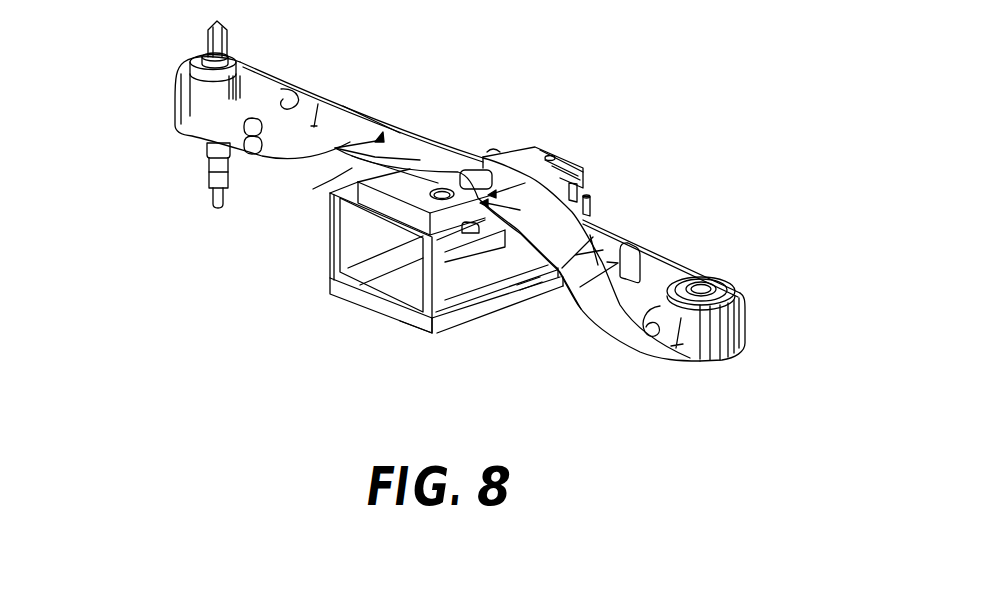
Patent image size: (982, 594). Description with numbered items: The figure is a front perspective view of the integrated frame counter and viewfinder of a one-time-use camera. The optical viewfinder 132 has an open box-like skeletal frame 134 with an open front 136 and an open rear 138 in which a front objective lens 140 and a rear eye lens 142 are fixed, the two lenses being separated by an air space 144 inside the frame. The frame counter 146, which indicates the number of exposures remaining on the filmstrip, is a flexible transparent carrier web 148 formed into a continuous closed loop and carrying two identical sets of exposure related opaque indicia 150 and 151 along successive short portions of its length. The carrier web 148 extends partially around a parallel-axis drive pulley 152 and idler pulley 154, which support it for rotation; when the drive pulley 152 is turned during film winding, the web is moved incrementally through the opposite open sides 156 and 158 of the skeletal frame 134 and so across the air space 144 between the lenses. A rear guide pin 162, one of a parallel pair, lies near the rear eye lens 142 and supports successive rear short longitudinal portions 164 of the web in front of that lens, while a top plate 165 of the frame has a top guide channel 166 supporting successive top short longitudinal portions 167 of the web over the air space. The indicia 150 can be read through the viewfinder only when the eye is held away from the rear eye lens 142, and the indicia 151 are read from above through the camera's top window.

The optical viewfinder 132 is at (467, 253).
The skeletal frame 134 is at (449, 335).
The open front 136 is at (340, 296).
The open rear 138 is at (588, 187).
The front objective lens 140 is at (400, 268).
The rear eye lens 142 is at (592, 203).
The air space 144 is at (500, 262).
The frame counter 146 is at (241, 50).
The carrier web 148 is at (460, 197).
The exposure related opaque indicia 150 is at (281, 96).
The exposure related opaque indicia 151 is at (238, 139).
The drive pulley 152 is at (207, 58).
The idler pulley 154 is at (737, 289).
The open side 156 is at (531, 253).
The open side 158 is at (337, 184).
The rear guide pin 162 is at (506, 255).
The rear short longitudinal portion 164 is at (358, 110).
The top plate 165 is at (430, 325).
The top guide channel 166 is at (514, 166).
The top short longitudinal portion 167 is at (473, 177).